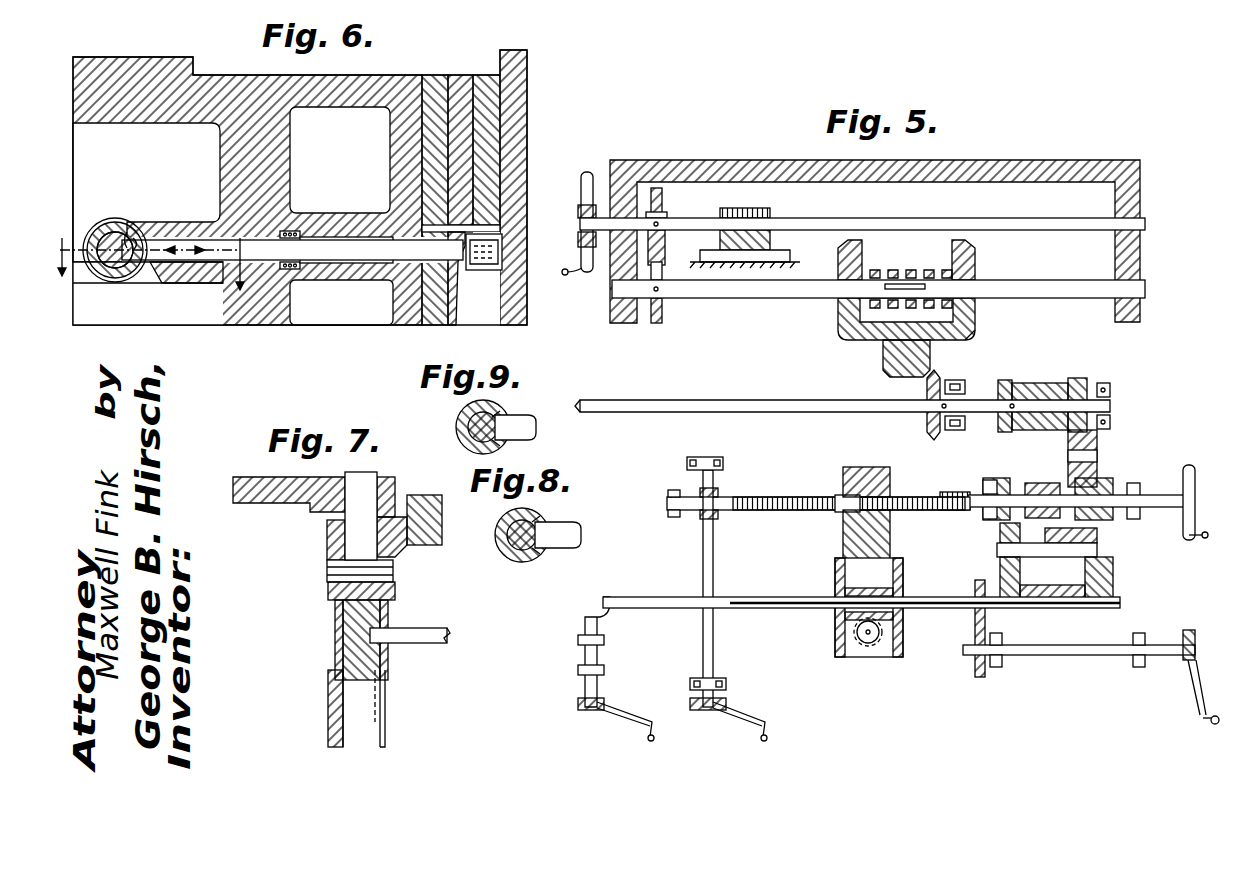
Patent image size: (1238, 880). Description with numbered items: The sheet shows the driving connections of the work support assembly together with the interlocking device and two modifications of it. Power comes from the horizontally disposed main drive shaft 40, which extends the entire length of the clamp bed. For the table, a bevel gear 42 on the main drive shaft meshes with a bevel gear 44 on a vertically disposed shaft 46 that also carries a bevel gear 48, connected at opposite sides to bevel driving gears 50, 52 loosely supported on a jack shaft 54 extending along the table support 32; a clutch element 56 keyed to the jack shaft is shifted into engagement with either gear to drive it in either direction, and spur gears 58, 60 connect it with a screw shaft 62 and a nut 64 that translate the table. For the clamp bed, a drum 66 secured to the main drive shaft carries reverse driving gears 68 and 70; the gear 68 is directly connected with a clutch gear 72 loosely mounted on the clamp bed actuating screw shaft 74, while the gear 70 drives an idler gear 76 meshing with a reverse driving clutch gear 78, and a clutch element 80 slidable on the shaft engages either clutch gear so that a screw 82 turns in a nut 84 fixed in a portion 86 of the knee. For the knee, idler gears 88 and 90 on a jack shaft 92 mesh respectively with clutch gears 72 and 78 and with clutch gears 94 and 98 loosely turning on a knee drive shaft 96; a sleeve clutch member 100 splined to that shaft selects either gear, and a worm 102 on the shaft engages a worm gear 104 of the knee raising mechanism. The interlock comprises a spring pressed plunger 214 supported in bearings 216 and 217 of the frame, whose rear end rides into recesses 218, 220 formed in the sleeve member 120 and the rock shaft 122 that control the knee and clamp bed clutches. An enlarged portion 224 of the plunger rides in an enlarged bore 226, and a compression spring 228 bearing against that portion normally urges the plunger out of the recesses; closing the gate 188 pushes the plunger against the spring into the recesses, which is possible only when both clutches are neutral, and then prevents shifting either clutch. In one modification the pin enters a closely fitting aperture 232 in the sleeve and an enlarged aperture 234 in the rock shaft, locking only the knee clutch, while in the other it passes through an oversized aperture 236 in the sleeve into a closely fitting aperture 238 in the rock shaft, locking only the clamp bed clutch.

In FIG. 5, the table support 32 is at (1020, 172).
In FIG. 5, the main drive shaft 40 is at (650, 397).
In FIG. 5, the bevel gear 42 is at (929, 426).
In FIG. 5, the bevel gear 44 is at (882, 374).
In FIG. 5, the vertically disposed shaft 46 is at (883, 356).
In FIG. 5, the bevel gear 48 is at (968, 341).
In FIG. 5, the bevel driving gear 50 is at (840, 306).
In FIG. 5, the bevel driving gear 52 is at (978, 308).
In FIG. 5, the jack shaft 54 is at (1030, 286).
In FIG. 5, the clutch element 56 is at (896, 272).
In FIG. 5, the spur gear 58 is at (658, 323).
In FIG. 5, the spur gear 60 is at (656, 190).
In FIG. 5, the screw shaft 62 is at (696, 226).
In FIG. 5, the nut 64 is at (756, 210).
In FIG. 5, the drum 66 is at (1040, 385).
In FIG. 5, the reverse driving gear 68 is at (1005, 381).
In FIG. 5, the reverse driving gear 70 is at (1080, 382).
In FIG. 5, the clutch gear 72 is at (1002, 476).
In FIG. 5, the clamp bed actuating screw shaft 74 is at (1157, 501).
In FIG. 5, the idler gear 76 is at (1098, 442).
In FIG. 5, the reverse driving clutch gear 78 is at (1100, 491).
In FIG. 5, the clutch element 80 is at (1031, 483).
In FIG. 5, the screw 82 is at (762, 497).
In FIG. 5, the nut 84 is at (848, 490).
In FIG. 5, the portion of the knee 86 is at (863, 478).
In FIG. 5, the idler gear 88 is at (1000, 530).
In FIG. 5, the idler gear 90 is at (1097, 532).
In FIG. 5, the jack shaft 92 is at (1097, 550).
In FIG. 5, the clutch gear 94 is at (1000, 576).
In FIG. 5, the knee drive shaft 96 is at (664, 608).
In FIG. 5, the clutch gear 98 is at (1097, 578).
In FIG. 5, the sleeve clutch member 100 is at (1033, 623).
In FIG. 5, the worm 102 is at (840, 579).
In FIG. 5, the worm gear 104 is at (869, 646).
In FIG. 6, the sleeve member 120 is at (113, 220).
In FIG. 7, the sleeve member 120 is at (332, 713).
In FIG. 9, the sleeve member 120 is at (474, 449).
In FIG. 8, the sleeve member 120 is at (528, 563).
In FIG. 6, the rock shaft 122 is at (108, 266).
In FIG. 7, the rock shaft 122 is at (372, 715).
In FIG. 9, the rock shaft 122 is at (468, 425).
In FIG. 8, the rock shaft 122 is at (506, 545).
In FIG. 6, the gate 188 is at (513, 135).
In FIG. 6, the plunger 214 is at (217, 254).
In FIG. 7, the plunger 214 is at (427, 643).
In FIG. 9, the plunger 214 is at (532, 430).
In FIG. 8, the plunger 214 is at (578, 538).
In FIG. 6, the bearing 216 is at (168, 268).
In FIG. 6, the bearing 217 is at (444, 262).
In FIG. 6, the recess 218 is at (137, 240).
In FIG. 6, the recess 220 is at (127, 232).
In FIG. 6, the enlarged portion 224 is at (356, 255).
In FIG. 6, the bore 226 is at (317, 270).
In FIG. 6, the compression spring 228 is at (293, 228).
In FIG. 8, the aperture 232 is at (544, 550).
In FIG. 8, the aperture 234 is at (540, 527).
In FIG. 9, the aperture 236 is at (505, 445).
In FIG. 9, the aperture 238 is at (500, 420).